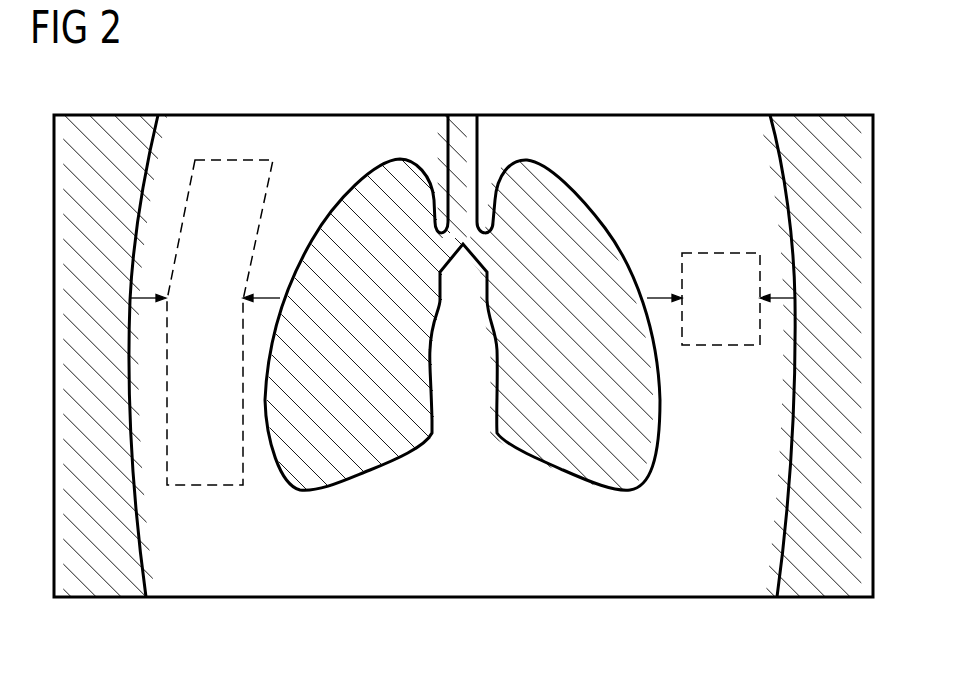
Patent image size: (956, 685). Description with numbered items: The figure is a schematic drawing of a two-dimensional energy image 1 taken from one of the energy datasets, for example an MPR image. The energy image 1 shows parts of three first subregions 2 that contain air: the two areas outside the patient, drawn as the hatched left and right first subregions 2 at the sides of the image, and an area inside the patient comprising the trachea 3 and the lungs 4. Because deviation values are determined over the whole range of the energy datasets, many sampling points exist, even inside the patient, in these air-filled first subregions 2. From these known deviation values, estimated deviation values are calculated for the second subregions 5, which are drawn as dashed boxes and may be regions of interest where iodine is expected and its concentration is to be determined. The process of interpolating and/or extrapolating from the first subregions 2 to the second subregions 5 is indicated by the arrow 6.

The energy image 1 is at (835, 600).
The first subregion 2 is at (97, 130).
The trachea 3 is at (479, 135).
The lungs 4 is at (379, 477).
The second subregion 5 is at (240, 172).
The arrow 6 is at (146, 296).